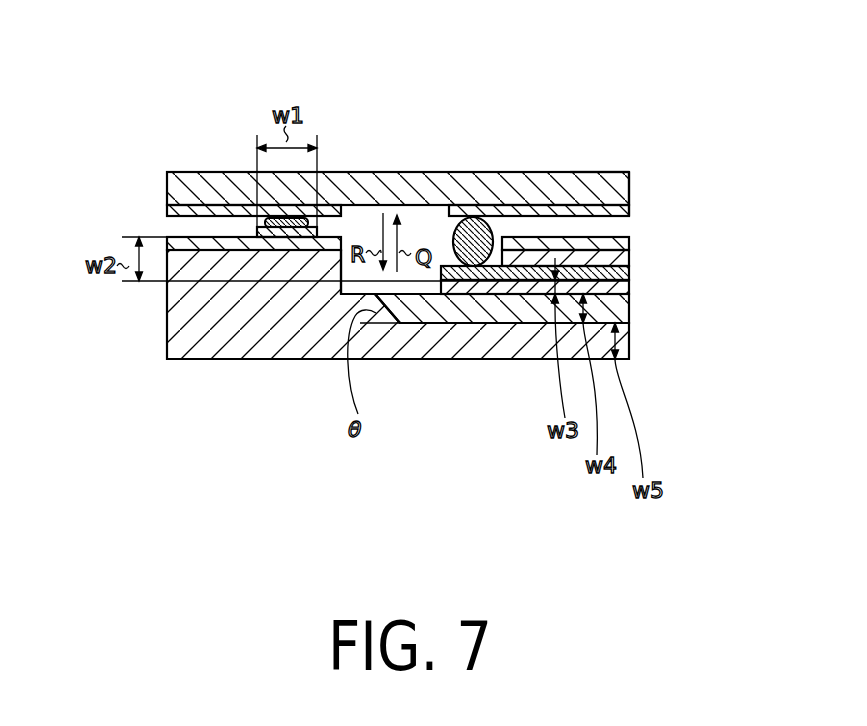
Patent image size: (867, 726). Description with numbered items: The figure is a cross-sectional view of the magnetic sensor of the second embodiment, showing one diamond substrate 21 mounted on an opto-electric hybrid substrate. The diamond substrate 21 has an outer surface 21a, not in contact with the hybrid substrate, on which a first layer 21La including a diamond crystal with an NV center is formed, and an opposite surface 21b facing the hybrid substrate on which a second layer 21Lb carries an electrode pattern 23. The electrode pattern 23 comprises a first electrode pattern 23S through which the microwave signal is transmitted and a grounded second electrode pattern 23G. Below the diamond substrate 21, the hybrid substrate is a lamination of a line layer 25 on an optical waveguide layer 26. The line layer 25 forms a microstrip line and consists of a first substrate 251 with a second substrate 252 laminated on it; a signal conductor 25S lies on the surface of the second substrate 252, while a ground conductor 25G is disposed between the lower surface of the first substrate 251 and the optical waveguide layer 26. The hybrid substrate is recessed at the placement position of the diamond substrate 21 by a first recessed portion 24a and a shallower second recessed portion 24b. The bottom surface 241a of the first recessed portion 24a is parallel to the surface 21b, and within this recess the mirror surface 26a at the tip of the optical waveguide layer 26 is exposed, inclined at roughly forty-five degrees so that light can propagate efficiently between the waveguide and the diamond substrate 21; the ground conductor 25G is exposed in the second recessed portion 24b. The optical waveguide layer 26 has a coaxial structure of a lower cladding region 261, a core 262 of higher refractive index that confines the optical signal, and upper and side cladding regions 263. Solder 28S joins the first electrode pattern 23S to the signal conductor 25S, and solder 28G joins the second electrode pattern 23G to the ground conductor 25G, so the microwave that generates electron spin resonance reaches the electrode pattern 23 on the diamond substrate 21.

The diamond substrate 21 is at (172, 173).
The surface 21a is at (603, 171).
The surface 21b is at (628, 212).
The first layer 21La is at (580, 171).
The second layer 21Lb is at (598, 218).
The electrode pattern 23 is at (338, 162).
The first electrode pattern 23S is at (172, 210).
The second electrode pattern 23G is at (452, 208).
The first recessed portion 24a is at (362, 228).
The second recessed portion 24b is at (443, 231).
The surface of the first recessed portion 241a is at (340, 293).
The line layer 25 is at (443, 366).
The conductor 25S is at (220, 240).
The conductor 25G is at (528, 277).
The first substrate 251 is at (630, 260).
The second substrate 252 is at (630, 245).
The optical waveguide layer 26 is at (484, 367).
The mirror surface 26a is at (380, 314).
The lower cladding region 261 is at (630, 289).
The core 262 is at (630, 314).
The upper and side cladding regions 263 is at (630, 340).
The solder 28S is at (264, 219).
The solder 28G is at (483, 252).